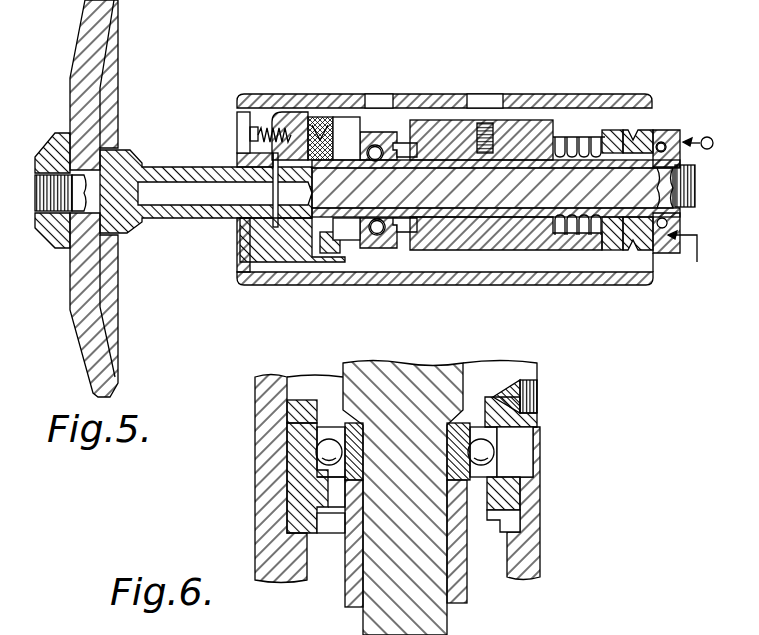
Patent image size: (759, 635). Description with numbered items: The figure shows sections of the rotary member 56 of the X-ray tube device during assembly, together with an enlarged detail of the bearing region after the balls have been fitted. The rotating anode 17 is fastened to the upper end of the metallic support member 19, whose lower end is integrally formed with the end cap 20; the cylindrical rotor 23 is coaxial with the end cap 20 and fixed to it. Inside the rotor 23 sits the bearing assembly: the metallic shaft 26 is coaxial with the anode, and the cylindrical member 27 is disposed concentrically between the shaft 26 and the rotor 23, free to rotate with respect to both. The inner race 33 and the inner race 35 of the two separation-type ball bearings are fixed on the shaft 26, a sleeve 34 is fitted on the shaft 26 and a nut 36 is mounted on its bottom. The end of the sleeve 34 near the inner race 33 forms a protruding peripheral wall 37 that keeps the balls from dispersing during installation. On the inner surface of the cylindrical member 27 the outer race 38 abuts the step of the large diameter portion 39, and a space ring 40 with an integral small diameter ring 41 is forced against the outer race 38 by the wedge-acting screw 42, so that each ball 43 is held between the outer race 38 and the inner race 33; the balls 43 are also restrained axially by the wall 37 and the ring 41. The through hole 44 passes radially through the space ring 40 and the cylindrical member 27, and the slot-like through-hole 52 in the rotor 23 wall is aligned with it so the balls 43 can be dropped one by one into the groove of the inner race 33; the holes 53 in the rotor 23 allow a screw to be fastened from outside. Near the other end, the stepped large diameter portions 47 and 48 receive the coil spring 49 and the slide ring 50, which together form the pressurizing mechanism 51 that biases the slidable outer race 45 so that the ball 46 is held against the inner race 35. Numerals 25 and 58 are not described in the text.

In FIG. 5, the rotating anode 17 is at (85, 33).
In FIG. 5, the support member 19 is at (165, 215).
In FIG. 5, the end cap 20 is at (246, 263).
In FIG. 5, the cylindrical rotor 23 is at (297, 103).
In FIG. 5, the adjusting screw with spring 25 is at (240, 122).
In FIG. 5, the shaft 26 is at (528, 197).
In FIG. 6, the shaft 26 is at (420, 385).
In FIG. 5, the cylindrical member 27 is at (513, 130).
In FIG. 6, the cylindrical member 27 is at (275, 563).
In FIG. 5, the inner race 33 is at (353, 224).
In FIG. 6, the inner race 33 is at (465, 425).
In FIG. 5, the sleeve 34 is at (477, 214).
In FIG. 6, the sleeve 34 is at (353, 598).
In FIG. 5, the inner race 35 is at (668, 130).
In FIG. 5, the nut 36 is at (696, 164).
In FIG. 5, the protruding peripheral wall 37 is at (405, 150).
In FIG. 6, the protruding peripheral wall 37 is at (290, 483).
In FIG. 5, the outer race 38 is at (397, 135).
In FIG. 6, the outer race 38 is at (290, 513).
In FIG. 5, the large diameter portion 39 is at (405, 225).
In FIG. 6, the large diameter portion 39 is at (515, 522).
In FIG. 5, the space ring 40 is at (333, 237).
In FIG. 6, the space ring 40 is at (288, 437).
In FIG. 6, the small diameter ring 41 is at (310, 407).
In FIG. 6, the screw 42 is at (538, 395).
In FIG. 5, the ball 43 is at (378, 236).
In FIG. 6, the ball 43 is at (486, 450).
In FIG. 5, the through hole 44 is at (350, 138).
In FIG. 6, the through hole 44 is at (510, 460).
In FIG. 5, the outer race 45 is at (633, 140).
In FIG. 5, the ball 46 is at (707, 137).
In FIG. 5, the large diameter portion 47 is at (553, 142).
In FIG. 5, the large diameter portion 48 is at (682, 127).
In FIG. 5, the coil spring 49 is at (563, 140).
In FIG. 5, the slide ring 50 is at (607, 140).
In FIG. 5, the pressurizing mechanism 51 is at (578, 228).
In FIG. 5, the through-hole 52 is at (383, 100).
In FIG. 5, the hole 53 is at (486, 122).
In FIG. 5, the rotary member 56 is at (453, 88).
In FIG. 5, the direction arrow 58 is at (686, 260).